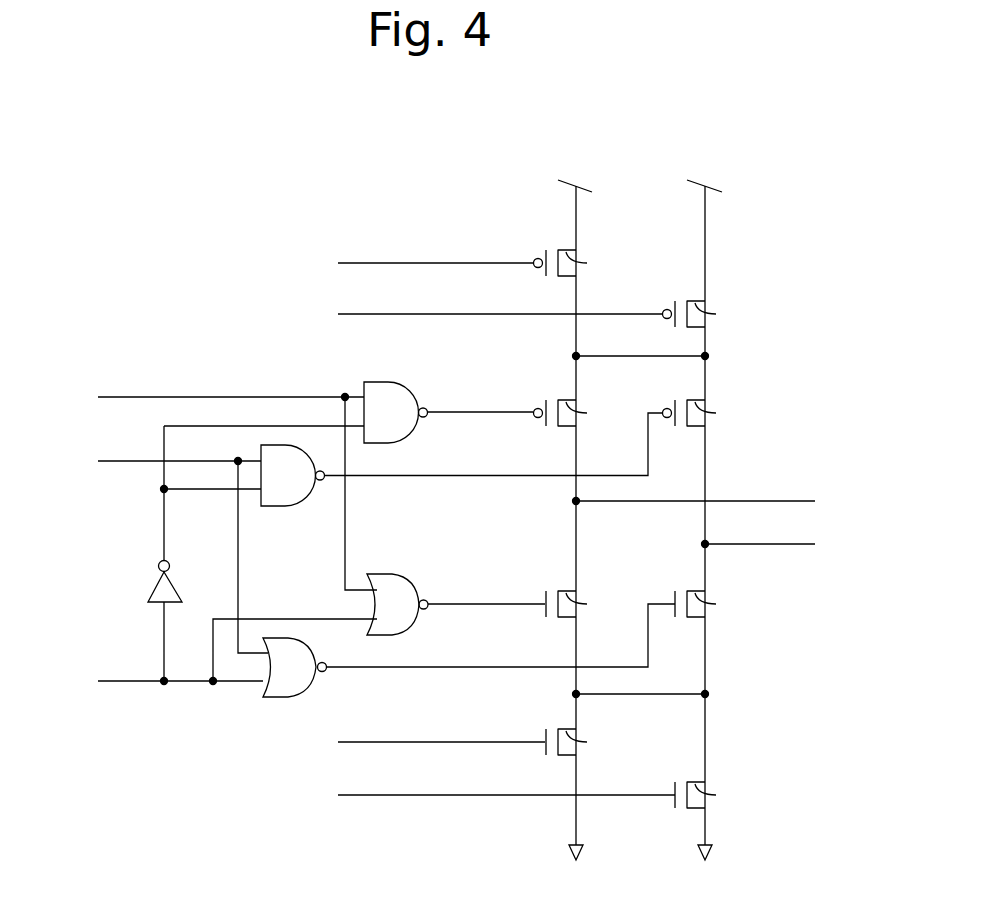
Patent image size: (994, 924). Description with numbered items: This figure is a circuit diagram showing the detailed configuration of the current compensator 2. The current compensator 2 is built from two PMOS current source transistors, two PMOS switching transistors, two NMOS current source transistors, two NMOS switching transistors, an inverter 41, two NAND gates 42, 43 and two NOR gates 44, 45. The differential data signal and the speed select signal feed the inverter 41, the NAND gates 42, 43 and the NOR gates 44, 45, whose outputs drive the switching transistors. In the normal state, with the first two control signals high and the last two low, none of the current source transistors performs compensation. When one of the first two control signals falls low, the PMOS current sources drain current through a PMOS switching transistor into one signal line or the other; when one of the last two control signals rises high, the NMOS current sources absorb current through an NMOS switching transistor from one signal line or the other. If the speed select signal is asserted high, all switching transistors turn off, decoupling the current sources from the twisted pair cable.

The current compensator 2 is at (158, 179).
The inverter 41 is at (156, 580).
The NAND gate 42 is at (402, 381).
The NAND gate 43 is at (293, 507).
The NOR gate 44 is at (402, 574).
The NOR gate 45 is at (308, 687).